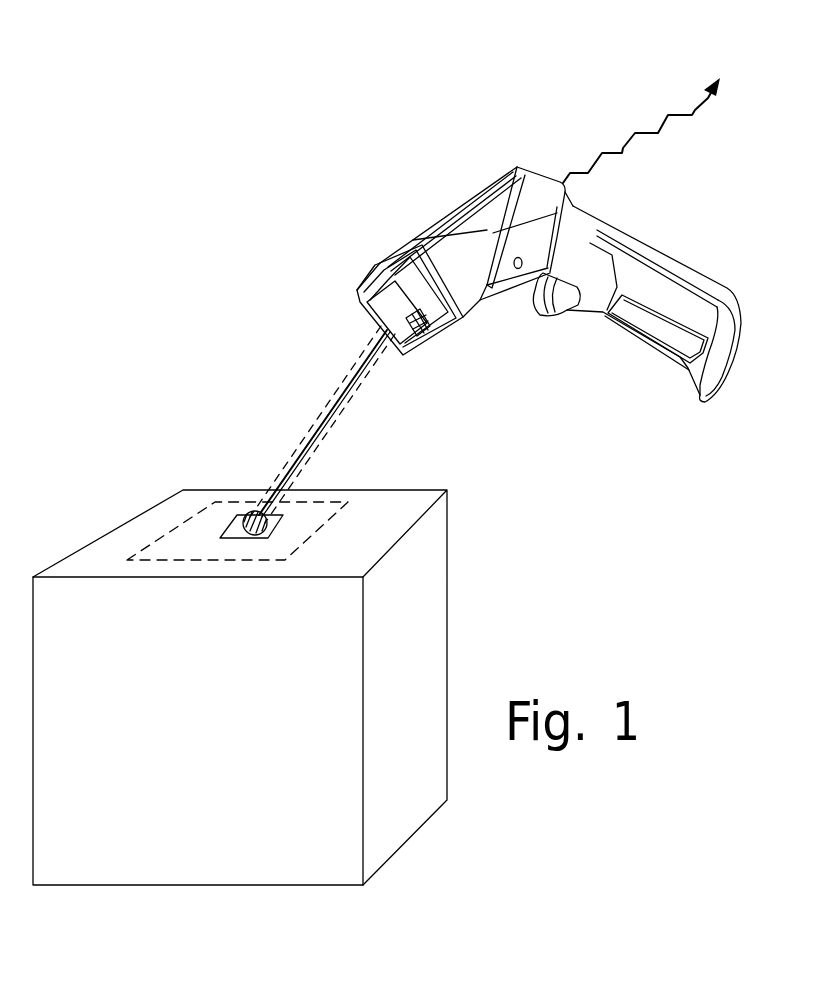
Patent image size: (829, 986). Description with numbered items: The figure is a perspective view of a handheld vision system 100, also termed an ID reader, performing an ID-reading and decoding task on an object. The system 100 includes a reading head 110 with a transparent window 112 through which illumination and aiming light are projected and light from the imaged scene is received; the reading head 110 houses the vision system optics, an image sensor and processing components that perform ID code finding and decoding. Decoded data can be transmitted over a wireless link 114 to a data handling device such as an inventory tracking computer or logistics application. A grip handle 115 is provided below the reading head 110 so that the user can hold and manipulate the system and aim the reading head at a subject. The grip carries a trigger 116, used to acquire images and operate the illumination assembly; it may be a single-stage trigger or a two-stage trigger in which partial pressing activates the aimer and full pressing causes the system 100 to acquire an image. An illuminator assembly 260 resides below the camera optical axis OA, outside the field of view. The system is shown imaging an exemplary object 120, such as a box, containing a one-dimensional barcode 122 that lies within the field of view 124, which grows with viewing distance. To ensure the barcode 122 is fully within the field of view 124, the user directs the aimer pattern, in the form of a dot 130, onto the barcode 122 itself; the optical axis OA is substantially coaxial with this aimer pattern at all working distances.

The handheld vision system 100 is at (556, 147).
The reading head 110 is at (437, 222).
The transparent window 112 is at (387, 300).
The wireless link 114 is at (623, 148).
The grip handle 115 is at (637, 273).
The trigger 116 is at (545, 308).
The illuminator assembly 260 is at (430, 350).
The camera optical axis OA is at (345, 400).
The object 120 is at (447, 591).
The 1D barcode 122 is at (285, 530).
The field of view 124 is at (304, 542).
The dot 130 is at (223, 560).